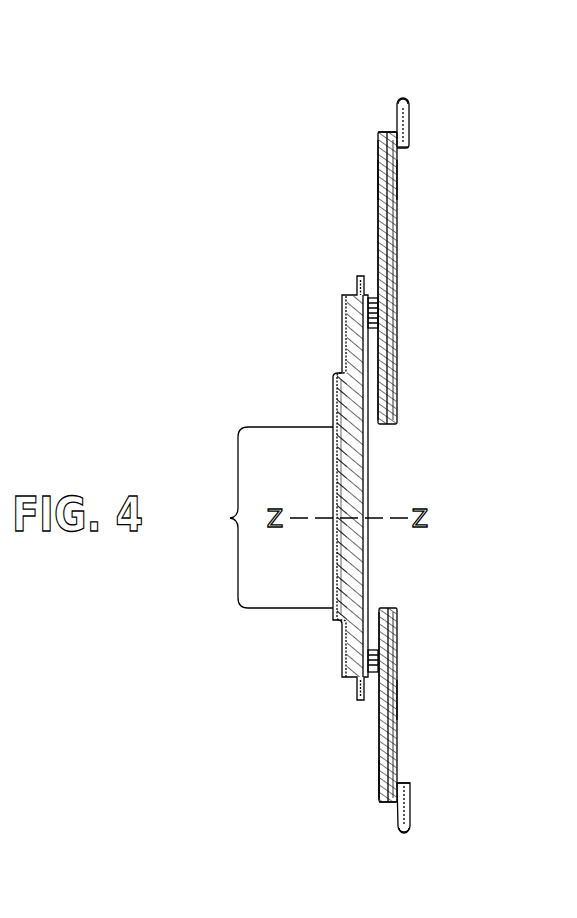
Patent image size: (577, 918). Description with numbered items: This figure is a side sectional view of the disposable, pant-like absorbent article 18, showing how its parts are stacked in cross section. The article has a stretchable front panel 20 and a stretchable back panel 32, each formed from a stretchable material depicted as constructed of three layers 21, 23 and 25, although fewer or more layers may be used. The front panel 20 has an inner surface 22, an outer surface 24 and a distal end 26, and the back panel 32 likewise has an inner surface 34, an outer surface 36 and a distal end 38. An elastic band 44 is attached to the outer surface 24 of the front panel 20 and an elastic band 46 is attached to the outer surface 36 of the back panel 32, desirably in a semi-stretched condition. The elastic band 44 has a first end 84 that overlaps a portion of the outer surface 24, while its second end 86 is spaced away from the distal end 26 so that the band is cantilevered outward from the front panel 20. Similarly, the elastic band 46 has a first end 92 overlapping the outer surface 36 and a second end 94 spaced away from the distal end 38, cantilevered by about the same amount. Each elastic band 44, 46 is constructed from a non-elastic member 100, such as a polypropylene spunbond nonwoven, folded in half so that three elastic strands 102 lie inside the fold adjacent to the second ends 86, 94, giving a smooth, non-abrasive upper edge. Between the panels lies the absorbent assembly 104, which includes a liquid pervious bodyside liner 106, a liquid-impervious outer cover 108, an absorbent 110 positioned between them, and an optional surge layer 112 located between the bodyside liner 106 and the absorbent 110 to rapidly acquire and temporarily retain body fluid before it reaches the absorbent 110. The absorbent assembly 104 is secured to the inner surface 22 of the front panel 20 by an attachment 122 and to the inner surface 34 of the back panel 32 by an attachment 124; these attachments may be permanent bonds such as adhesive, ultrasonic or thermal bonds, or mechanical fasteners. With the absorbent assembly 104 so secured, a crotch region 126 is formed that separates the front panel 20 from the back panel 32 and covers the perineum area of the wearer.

The absorbent article 18 is at (512, 65).
The front panel 20 is at (401, 742).
The layer 21 is at (378, 215).
The inner surface 22 is at (380, 780).
The layer 23 is at (398, 250).
The outer surface 24 is at (398, 690).
The layer 25 is at (398, 282).
The distal end 26 is at (388, 803).
The back panel 32 is at (401, 217).
The inner surface 34 is at (378, 180).
The outer surface 36 is at (398, 180).
The distal end 38 is at (388, 132).
The elastic band 44 is at (414, 826).
The elastic band 46 is at (448, 103).
The first end 84 is at (409, 788).
The second end 86 is at (404, 833).
The first end 92 is at (410, 146).
The second end 94 is at (400, 100).
The non-elastic member 100 is at (410, 106).
The elastic strands 102 is at (409, 134).
The absorbent assembly 104 is at (328, 460).
The bodyside liner 106 is at (334, 614).
The outer cover 108 is at (367, 455).
The absorbent 110 is at (357, 548).
The surge layer 112 is at (335, 572).
The attachment 122 is at (372, 675).
The attachment 124 is at (372, 300).
The crotch region 126 is at (256, 517).